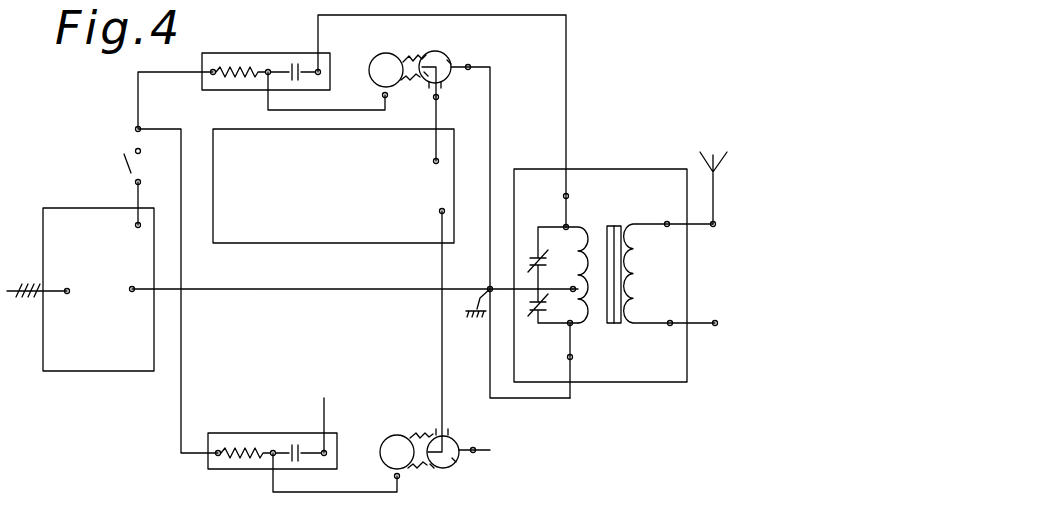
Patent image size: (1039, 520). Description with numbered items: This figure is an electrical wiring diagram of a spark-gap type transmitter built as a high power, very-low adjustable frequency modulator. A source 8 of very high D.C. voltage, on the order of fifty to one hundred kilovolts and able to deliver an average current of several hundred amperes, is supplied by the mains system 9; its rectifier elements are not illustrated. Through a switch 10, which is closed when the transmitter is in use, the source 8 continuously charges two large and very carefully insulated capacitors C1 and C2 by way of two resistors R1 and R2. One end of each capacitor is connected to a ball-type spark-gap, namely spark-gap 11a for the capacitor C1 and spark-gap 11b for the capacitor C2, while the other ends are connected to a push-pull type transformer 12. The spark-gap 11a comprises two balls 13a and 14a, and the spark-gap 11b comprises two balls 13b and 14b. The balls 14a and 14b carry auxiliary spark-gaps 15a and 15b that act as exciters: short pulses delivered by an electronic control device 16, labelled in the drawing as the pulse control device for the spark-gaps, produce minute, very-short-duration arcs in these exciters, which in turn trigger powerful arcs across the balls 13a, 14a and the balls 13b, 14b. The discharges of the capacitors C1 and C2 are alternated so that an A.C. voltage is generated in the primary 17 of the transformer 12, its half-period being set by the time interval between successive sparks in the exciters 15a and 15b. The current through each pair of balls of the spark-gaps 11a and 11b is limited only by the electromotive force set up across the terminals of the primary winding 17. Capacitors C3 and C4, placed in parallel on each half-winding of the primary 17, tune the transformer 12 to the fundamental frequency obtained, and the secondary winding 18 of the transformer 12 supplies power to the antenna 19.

The source 8 is at (70, 216).
The mains system 9 is at (26, 286).
The switch 10 is at (128, 158).
The resistor R1 is at (232, 69).
The capacitor C1 is at (295, 64).
The resistor R2 is at (232, 444).
The capacitor C2 is at (295, 445).
The ball-type spark-gap 11a is at (426, 50).
The ball-type spark-gap 11b is at (483, 435).
The ball 13a is at (383, 62).
The ball 13b is at (393, 443).
The ball 14a is at (450, 58).
The ball 14b is at (459, 460).
The auxiliary spark-gap 15a is at (427, 78).
The auxiliary spark-gap 15b is at (442, 468).
The electronic control device 16 is at (327, 235).
The push-pull type transformer 12 is at (614, 226).
The capacitor C3 is at (526, 262).
The capacitor C4 is at (533, 308).
The primary winding 17 is at (595, 224).
The secondary winding 18 is at (641, 290).
The antenna 19 is at (713, 192).